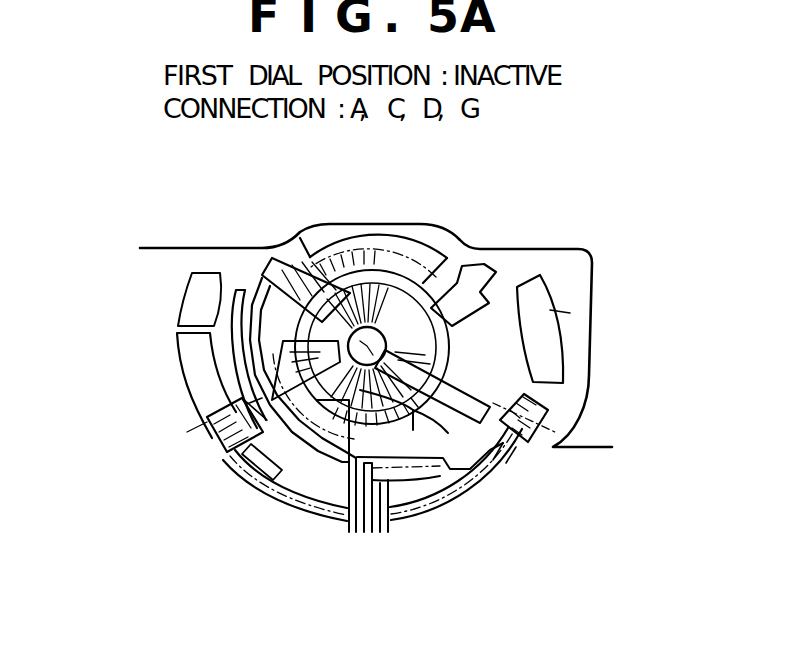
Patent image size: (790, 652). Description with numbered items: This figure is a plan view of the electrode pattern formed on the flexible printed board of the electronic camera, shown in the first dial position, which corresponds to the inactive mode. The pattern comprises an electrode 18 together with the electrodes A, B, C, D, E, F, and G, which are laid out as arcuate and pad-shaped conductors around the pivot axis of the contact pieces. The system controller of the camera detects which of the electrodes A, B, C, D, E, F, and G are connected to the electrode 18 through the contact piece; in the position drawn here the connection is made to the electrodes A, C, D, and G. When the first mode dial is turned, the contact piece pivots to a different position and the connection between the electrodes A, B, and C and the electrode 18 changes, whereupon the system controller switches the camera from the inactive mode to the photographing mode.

The electrode 18 is at (260, 262).
The electrode A is at (532, 443).
The electrode B is at (180, 302).
The electrode C is at (177, 370).
The electrode D is at (370, 533).
The electrode E is at (260, 273).
The electrode F is at (493, 272).
The electrode G is at (383, 225).